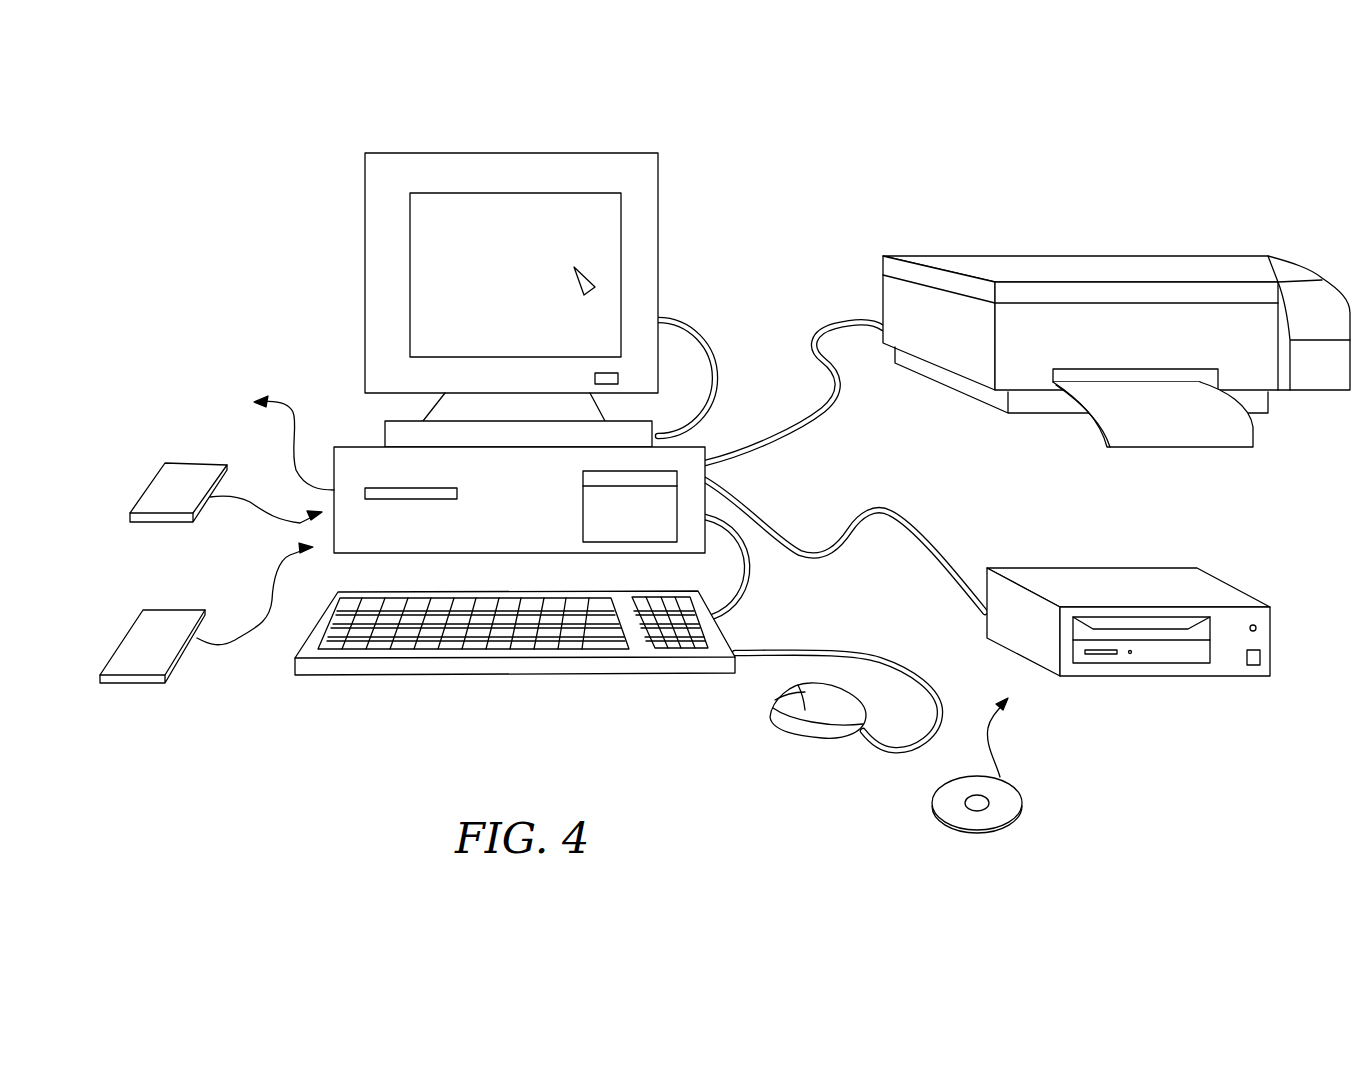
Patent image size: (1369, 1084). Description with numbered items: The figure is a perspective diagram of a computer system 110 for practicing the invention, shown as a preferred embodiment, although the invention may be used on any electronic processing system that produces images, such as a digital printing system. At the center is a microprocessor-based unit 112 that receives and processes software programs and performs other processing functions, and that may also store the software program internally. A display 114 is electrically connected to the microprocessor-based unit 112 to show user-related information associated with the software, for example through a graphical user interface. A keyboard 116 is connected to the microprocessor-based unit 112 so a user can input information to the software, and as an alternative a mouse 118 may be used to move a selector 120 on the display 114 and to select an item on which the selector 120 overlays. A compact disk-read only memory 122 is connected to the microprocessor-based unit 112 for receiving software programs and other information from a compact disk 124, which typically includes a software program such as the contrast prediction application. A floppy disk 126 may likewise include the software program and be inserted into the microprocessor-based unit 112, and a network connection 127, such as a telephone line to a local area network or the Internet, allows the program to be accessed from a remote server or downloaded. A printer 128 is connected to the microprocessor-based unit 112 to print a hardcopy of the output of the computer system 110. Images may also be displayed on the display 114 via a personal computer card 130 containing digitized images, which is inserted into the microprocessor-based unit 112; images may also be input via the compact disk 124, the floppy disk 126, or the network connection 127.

The computer system 110 is at (735, 210).
The microprocessor-based unit 112 is at (362, 448).
The display 114 is at (480, 153).
The keyboard 116 is at (340, 675).
The mouse 118 is at (810, 737).
The selector 120 is at (588, 281).
The compact disk-read only memory (CD-ROM) 122 is at (1092, 568).
The compact disk 124 is at (1022, 803).
The floppy disk 126 is at (153, 478).
The network connection 127 is at (270, 440).
The printer 128 is at (1072, 255).
The personal computer card (PC card) 130 is at (132, 623).